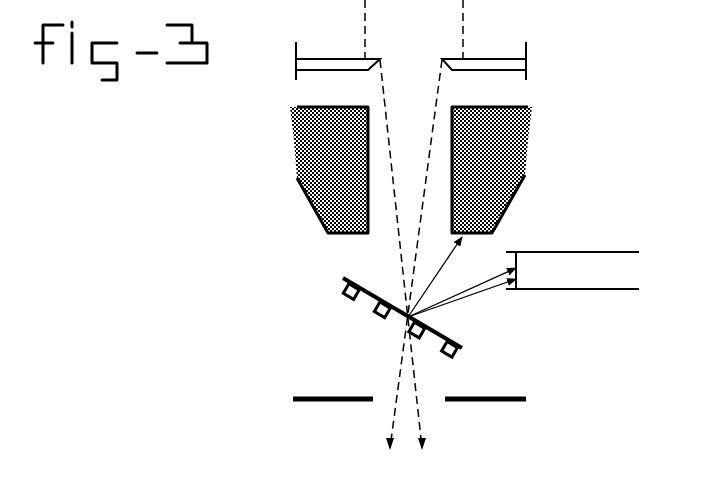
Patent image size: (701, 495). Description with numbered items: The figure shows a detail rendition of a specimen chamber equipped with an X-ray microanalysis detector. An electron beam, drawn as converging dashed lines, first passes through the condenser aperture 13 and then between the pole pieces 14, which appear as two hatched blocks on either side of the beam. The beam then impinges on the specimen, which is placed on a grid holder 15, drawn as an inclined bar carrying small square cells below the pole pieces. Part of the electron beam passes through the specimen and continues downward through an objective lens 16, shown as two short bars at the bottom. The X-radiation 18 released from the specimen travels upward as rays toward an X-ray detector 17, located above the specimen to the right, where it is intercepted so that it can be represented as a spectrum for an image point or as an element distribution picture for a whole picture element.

The condenser aperture 13 is at (502, 64).
The pole pieces 14 is at (515, 132).
The grid holder 15 is at (375, 327).
The objective lens 16 is at (518, 400).
The X-ray detector 17 is at (588, 265).
The X-radiation 18 is at (457, 298).